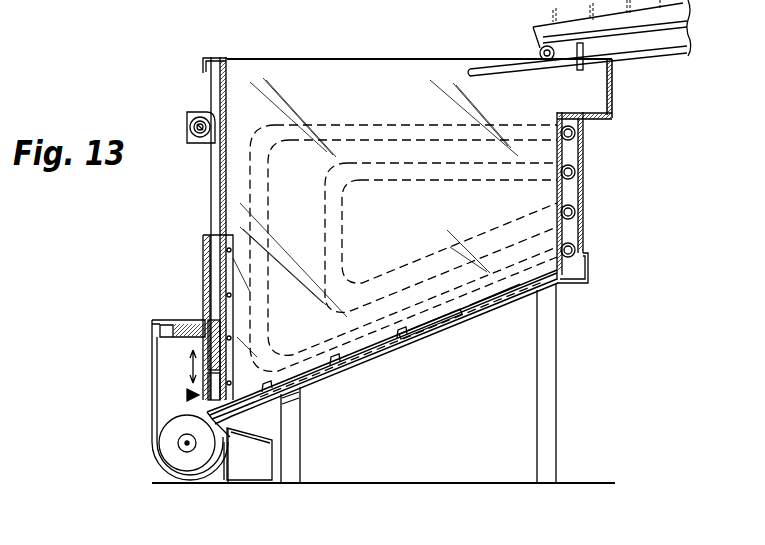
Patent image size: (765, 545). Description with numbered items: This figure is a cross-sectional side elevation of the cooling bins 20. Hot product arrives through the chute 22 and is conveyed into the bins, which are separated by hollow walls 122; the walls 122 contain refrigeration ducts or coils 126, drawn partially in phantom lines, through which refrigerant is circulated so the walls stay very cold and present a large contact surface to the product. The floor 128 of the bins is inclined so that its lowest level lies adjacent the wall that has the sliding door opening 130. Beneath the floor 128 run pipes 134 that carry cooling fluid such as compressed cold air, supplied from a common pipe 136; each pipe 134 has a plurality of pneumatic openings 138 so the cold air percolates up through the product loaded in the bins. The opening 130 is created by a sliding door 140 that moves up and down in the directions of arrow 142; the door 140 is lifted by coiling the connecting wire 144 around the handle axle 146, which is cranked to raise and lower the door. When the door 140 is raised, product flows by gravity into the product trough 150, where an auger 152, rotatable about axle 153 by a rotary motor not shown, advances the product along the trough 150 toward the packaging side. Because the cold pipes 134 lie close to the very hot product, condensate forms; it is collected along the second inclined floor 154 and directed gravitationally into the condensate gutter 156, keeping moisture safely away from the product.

The cooling bins 20 is at (603, 199).
The chute 22 is at (503, 80).
The walls 122 is at (354, 71).
The refrigeration ducts or coils 126 is at (406, 104).
The floor 128 is at (498, 276).
The sliding door opening 130 is at (190, 395).
The pipes 134 is at (382, 342).
The common pipe 136 is at (287, 426).
The pneumatic openings 138 is at (402, 322).
The sliding door 140 is at (203, 338).
The arrow 142 is at (188, 362).
The connecting wire 144 is at (228, 183).
The handle axle 146 is at (187, 130).
The product trough 150 is at (152, 326).
The auger 152 is at (177, 437).
The axle 153 is at (172, 470).
The second inclined floor 154 is at (372, 372).
The condensate gutter 156 is at (253, 466).